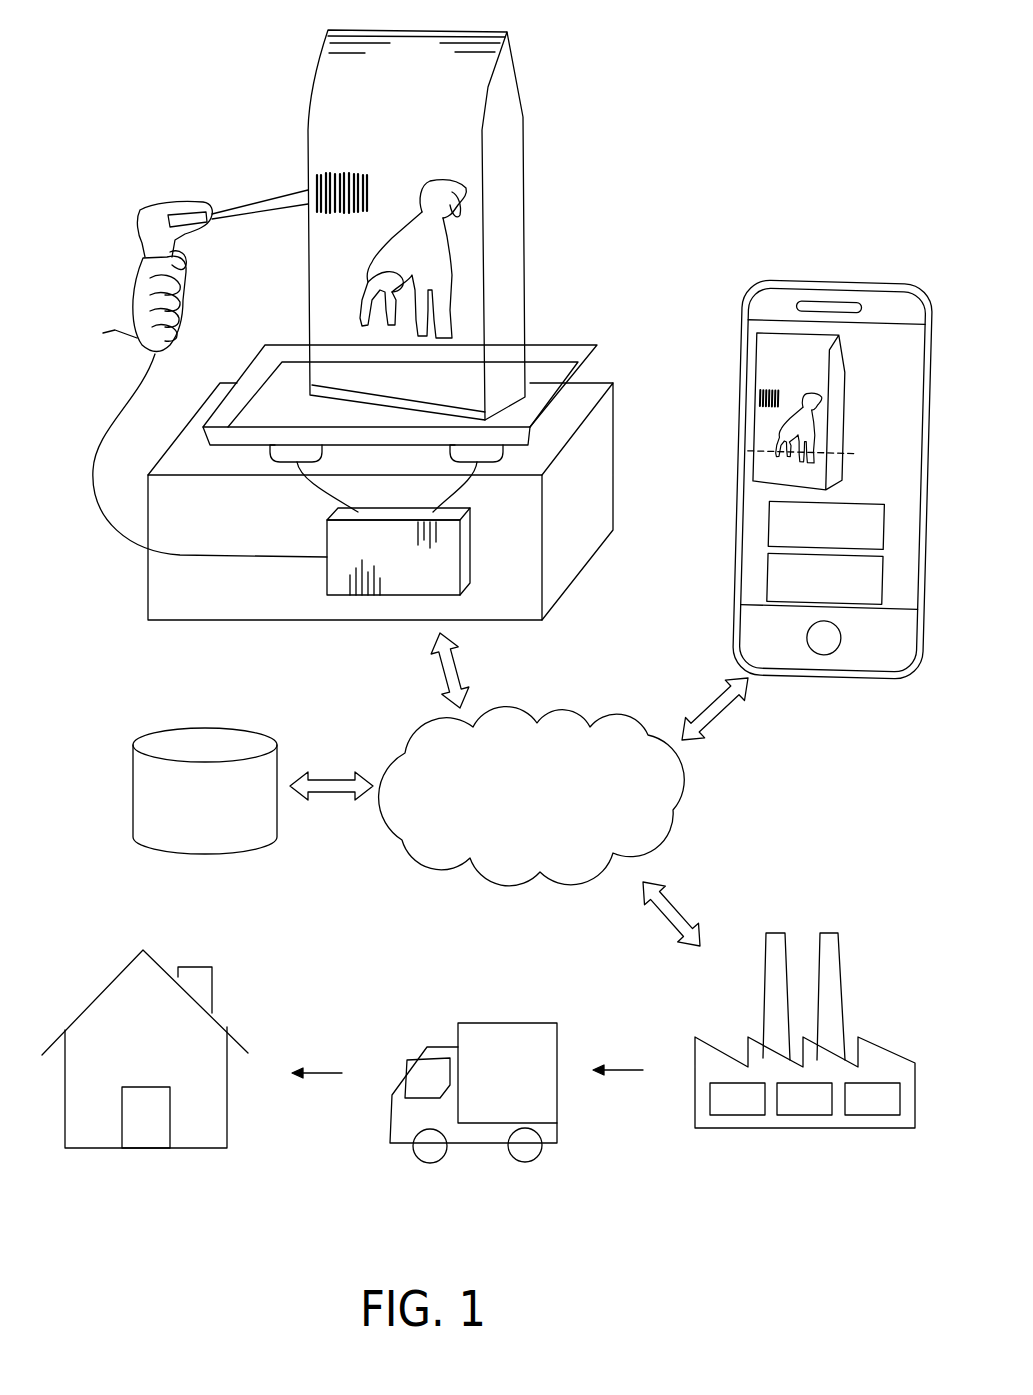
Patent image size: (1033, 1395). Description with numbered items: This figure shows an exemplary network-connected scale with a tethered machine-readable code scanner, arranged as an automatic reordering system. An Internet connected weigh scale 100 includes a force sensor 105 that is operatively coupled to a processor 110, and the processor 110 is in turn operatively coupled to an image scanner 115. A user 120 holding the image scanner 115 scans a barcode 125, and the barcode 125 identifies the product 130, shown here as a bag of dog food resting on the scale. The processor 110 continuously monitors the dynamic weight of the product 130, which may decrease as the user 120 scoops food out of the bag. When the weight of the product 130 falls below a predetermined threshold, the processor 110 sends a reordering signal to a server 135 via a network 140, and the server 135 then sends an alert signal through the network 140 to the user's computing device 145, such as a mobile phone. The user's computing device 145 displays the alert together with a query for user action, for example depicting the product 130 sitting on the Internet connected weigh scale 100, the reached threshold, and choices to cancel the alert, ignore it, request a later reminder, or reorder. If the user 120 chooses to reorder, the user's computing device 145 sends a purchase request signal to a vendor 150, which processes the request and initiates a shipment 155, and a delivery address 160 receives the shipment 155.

The Internet connected weigh scale 100 is at (603, 603).
The force sensor 105 is at (270, 458).
The processor 110 is at (327, 583).
The image scanner 115 is at (140, 210).
The user 120 is at (123, 273).
The barcode 125 is at (380, 182).
The product 130 is at (523, 227).
The server 135 is at (235, 850).
The network 140 is at (557, 818).
The user's computing device 145 is at (733, 352).
The vendor 150 is at (875, 1128).
The shipment 155 is at (492, 1138).
The delivery address 160 is at (182, 1148).